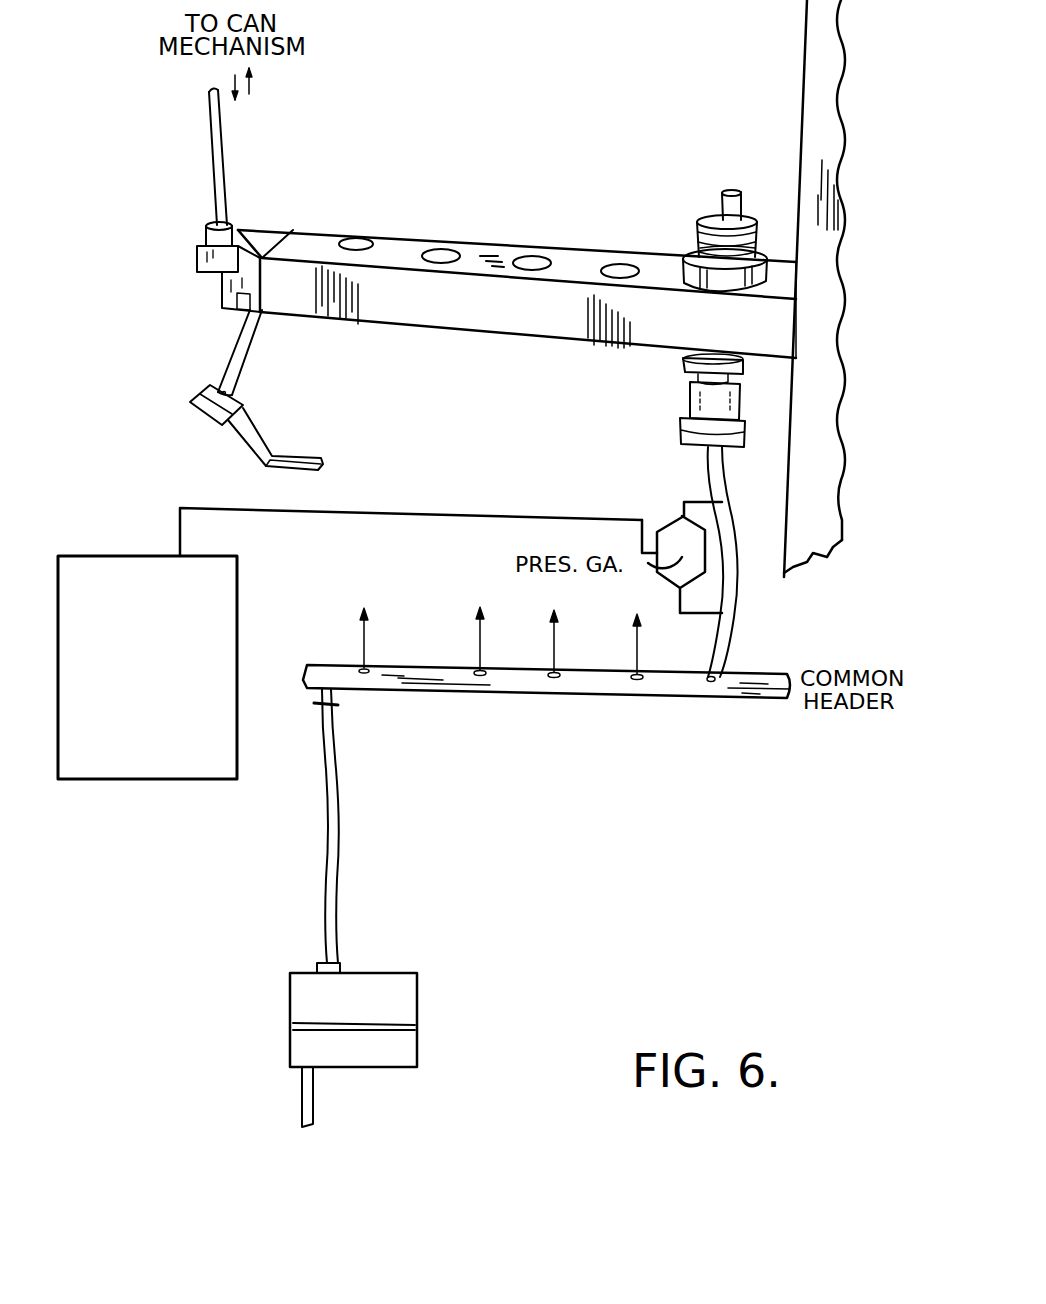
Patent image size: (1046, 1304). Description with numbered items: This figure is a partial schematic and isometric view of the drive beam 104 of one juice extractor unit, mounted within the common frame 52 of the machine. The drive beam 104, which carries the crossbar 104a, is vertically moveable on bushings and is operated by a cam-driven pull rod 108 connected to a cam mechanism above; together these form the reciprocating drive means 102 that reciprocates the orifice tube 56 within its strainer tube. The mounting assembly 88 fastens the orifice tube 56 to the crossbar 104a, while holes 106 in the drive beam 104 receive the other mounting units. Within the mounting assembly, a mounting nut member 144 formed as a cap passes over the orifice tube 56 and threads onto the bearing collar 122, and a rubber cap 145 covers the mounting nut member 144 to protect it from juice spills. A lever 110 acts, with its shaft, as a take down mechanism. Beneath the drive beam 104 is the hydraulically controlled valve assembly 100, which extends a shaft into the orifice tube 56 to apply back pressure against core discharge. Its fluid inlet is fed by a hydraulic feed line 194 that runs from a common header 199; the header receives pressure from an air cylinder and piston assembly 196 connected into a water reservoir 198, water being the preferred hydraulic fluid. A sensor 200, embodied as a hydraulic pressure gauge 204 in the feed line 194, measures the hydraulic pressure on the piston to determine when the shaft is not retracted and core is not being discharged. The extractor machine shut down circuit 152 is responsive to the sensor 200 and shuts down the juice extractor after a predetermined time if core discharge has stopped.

The common frame 52 is at (832, 237).
The orifice tube 56 is at (735, 192).
The mounting assembly 88 is at (688, 240).
The valve assembly 100 is at (680, 404).
The reciprocating drive means 102 is at (150, 308).
The drive beam 104 is at (313, 307).
The crossbar 104a is at (402, 240).
The holes 106 is at (354, 240).
The pull rods 108 is at (222, 140).
The lever 110 is at (206, 407).
The bearing collar 122 is at (301, 455).
The mounting nut member 144 is at (716, 219).
The rubber cap 145 is at (758, 238).
The shut down circuit 152 is at (106, 780).
The hydraulic feed line 194 is at (738, 548).
The air cylinder and piston assembly 196 is at (420, 1040).
The water reservoir 198 is at (407, 990).
The common header 199 is at (516, 692).
The sensor 200 is at (668, 514).
The hydraulic pressure gauge 204 is at (655, 517).